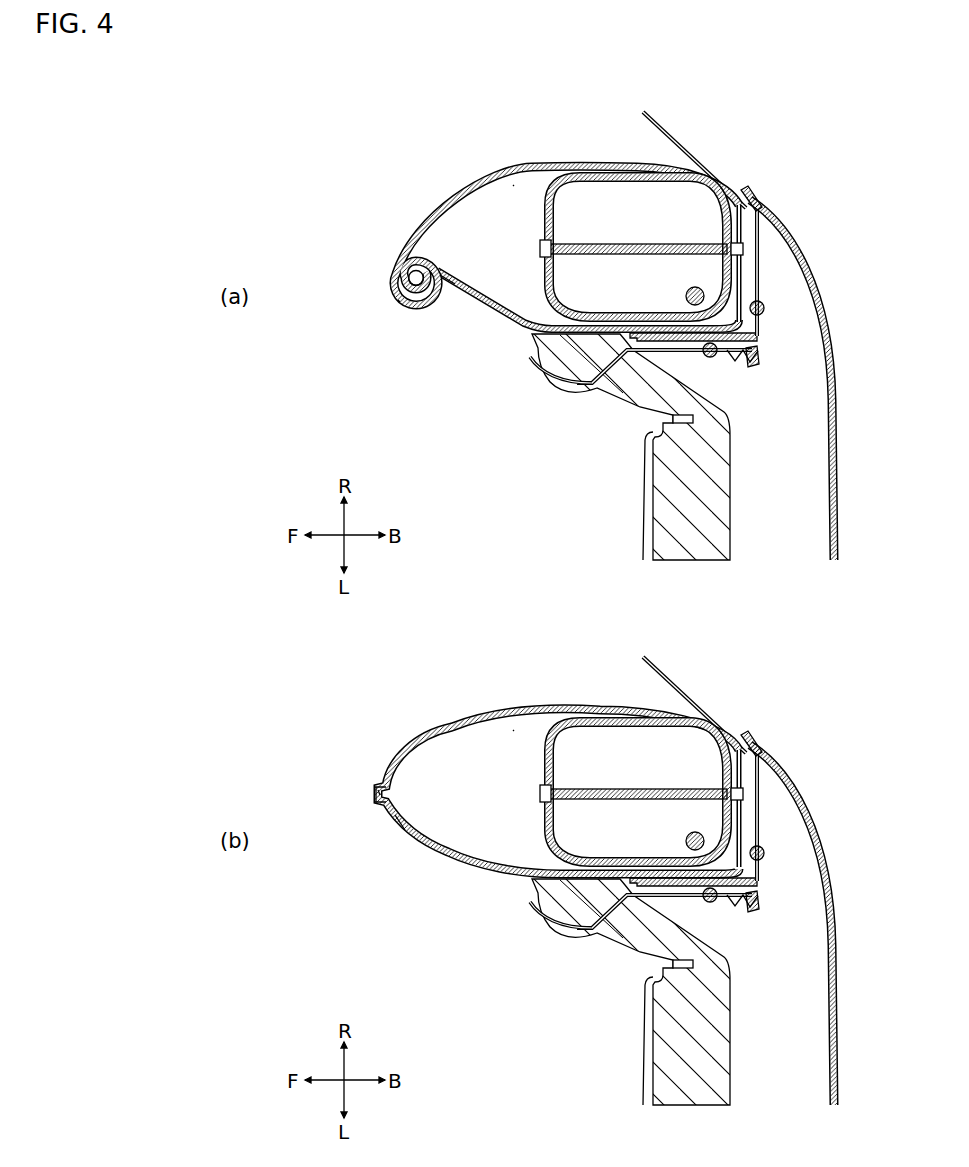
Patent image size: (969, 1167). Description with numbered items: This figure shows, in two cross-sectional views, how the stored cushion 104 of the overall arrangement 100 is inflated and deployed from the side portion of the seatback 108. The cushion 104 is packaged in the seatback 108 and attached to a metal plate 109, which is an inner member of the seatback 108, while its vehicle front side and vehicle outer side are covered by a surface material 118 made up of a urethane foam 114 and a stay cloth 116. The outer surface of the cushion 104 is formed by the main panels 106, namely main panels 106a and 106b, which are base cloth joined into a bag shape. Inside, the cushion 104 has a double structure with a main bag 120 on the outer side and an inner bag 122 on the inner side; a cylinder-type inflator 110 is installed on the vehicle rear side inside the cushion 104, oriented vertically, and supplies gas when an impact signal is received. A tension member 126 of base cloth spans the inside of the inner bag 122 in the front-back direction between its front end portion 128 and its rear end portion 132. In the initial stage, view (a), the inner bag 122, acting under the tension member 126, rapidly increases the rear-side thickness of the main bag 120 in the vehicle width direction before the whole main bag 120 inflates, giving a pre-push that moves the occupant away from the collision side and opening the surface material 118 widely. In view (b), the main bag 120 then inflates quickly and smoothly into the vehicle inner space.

The vehicle body structure 100 is at (440, 141).
The cushion 104 is at (433, 216).
The main panels 106 is at (337, 313).
The main panel 106a is at (455, 318).
The main panel 106b is at (397, 298).
The seatback 108 is at (642, 513).
The metal plate 109 is at (762, 343).
The inflator 110 is at (687, 300).
The urethane foam 114 is at (572, 365).
The stay cloth 116 is at (690, 352).
The surface material 118 is at (535, 366).
The main bag 120 is at (513, 185).
The inner bag 122 is at (570, 187).
The tension member 126 is at (625, 245).
The front end portion 128 is at (540, 248).
The rear end portion 132 is at (743, 250).